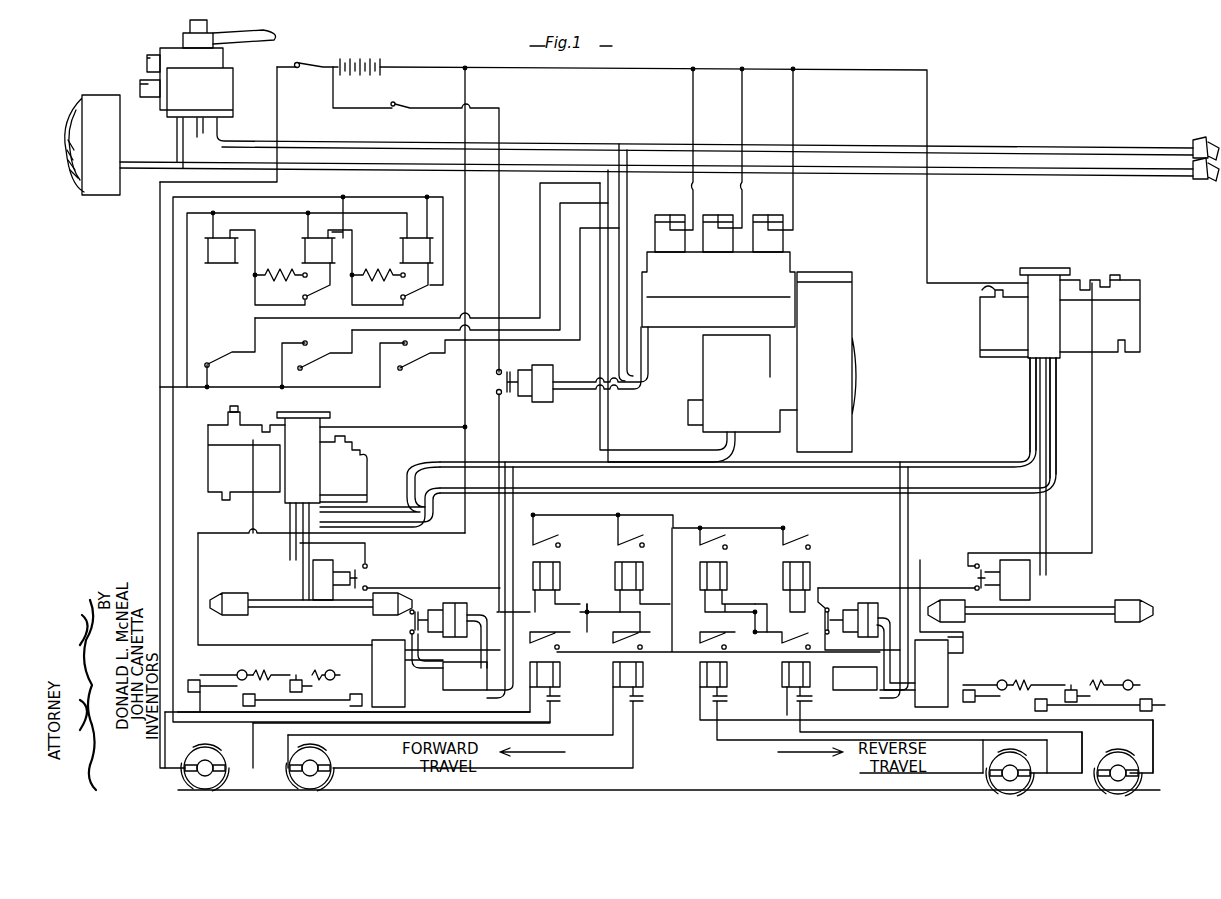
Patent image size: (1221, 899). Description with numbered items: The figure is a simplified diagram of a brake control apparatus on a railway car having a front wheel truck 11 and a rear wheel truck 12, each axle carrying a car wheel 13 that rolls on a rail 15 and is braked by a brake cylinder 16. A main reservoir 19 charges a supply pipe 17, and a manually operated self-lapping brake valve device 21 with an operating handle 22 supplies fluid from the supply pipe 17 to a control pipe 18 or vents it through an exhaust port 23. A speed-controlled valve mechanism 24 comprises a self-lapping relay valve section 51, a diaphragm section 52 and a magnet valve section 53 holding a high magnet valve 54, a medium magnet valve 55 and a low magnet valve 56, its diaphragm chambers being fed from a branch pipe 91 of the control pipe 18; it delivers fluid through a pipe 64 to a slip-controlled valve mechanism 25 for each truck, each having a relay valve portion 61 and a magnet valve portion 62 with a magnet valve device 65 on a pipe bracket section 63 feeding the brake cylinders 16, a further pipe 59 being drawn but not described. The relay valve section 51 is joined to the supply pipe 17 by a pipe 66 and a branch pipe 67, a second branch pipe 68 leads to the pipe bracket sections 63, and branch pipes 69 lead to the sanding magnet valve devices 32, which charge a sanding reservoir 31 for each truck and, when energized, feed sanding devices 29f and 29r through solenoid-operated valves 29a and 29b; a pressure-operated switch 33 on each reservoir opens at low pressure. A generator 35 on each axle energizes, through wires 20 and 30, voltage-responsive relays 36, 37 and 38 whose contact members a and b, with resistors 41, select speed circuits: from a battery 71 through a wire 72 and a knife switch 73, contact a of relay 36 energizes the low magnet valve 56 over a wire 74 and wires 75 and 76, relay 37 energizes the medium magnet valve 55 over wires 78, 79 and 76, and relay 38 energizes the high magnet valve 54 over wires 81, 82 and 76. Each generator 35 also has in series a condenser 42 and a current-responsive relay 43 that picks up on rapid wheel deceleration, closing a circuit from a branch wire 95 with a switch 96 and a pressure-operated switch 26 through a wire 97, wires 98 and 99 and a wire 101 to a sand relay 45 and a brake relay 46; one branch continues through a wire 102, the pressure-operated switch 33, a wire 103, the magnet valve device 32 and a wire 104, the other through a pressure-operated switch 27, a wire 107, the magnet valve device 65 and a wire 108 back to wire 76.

The front wheel truck 11 is at (278, 755).
The rear wheel truck 12 is at (1076, 755).
The car wheel 13 is at (222, 760).
The rail 15 is at (680, 787).
The brake cylinder 16 is at (250, 612).
The supply pipe 17 is at (551, 175).
The control pipe 18 is at (571, 145).
The main reservoir 19 is at (98, 95).
The wire 20 is at (158, 492).
The brake valve device 21 is at (232, 75).
The operating handle 22 is at (280, 40).
The exhaust port 23 is at (199, 138).
The speed-controlled valve mechanism 24 is at (850, 268).
The slip-controlled valve mechanism 25 is at (331, 409).
The pressure-operated switch 26 is at (543, 408).
The pressure-operated switch 27 is at (308, 563).
The solenoid-operated valve 29a is at (614, 678).
The solenoid-operated valve 29b is at (740, 682).
The sanding device 29f is at (195, 676).
The sanding device 29r is at (243, 700).
The wire 30 is at (170, 515).
The sanding reservoir 31 is at (486, 686).
The magnet valve device 32 is at (366, 644).
The pressure-operated switch 33 is at (448, 606).
The generator 35 is at (200, 760).
The voltage-responsive relay 36 is at (205, 258).
The voltage-responsive relay 37 is at (303, 254).
The voltage-responsive relay 38 is at (400, 255).
The resistor 41 is at (286, 284).
The electrical condenser 42 is at (565, 697).
The current-responsive relay 43 is at (562, 670).
The sand relay 45 is at (530, 568).
The brake relay 46 is at (614, 568).
The self-lapping relay valve section 51 is at (738, 440).
The diaphragm section 52 is at (852, 447).
The magnet valve section 53 is at (796, 260).
The high magnet valve 54 is at (650, 247).
The medium magnet valve 55 is at (722, 212).
The low magnet valve 56 is at (772, 212).
The pipe 59 is at (300, 586).
The relay valve portion 61 is at (362, 468).
The magnet valve portion 62 is at (208, 468).
The pipe bracket section 63 is at (292, 508).
The pipe 64 is at (448, 510).
The magnet valve device 65 is at (268, 412).
The pipe 66 is at (598, 372).
The branch pipe 67 is at (612, 446).
The branch pipe 68 is at (548, 463).
The branch pipe 69 is at (504, 555).
The battery 71 is at (372, 60).
The wire 72 is at (277, 123).
The knife switch 73 is at (307, 74).
The wire 74 is at (538, 243).
The wire 75 is at (790, 113).
The wire 76 is at (606, 72).
The wire 78 is at (563, 278).
The wire 79 is at (738, 113).
The wire 81 is at (580, 297).
The wire 82 is at (690, 113).
The branch pipe 91 is at (622, 375).
The branch wire 95 is at (333, 90).
The switch 96 is at (399, 104).
The wire 97 is at (690, 645).
The wire 98 is at (596, 632).
The wire 99 is at (586, 623).
The wire 101 is at (632, 620).
The wire 102 is at (527, 612).
The wire 103 is at (458, 654).
The wire 104 is at (465, 90).
The wire 107 is at (263, 545).
The wire 108 is at (410, 434).
The contact member a is at (312, 353).
The contact member b is at (318, 291).